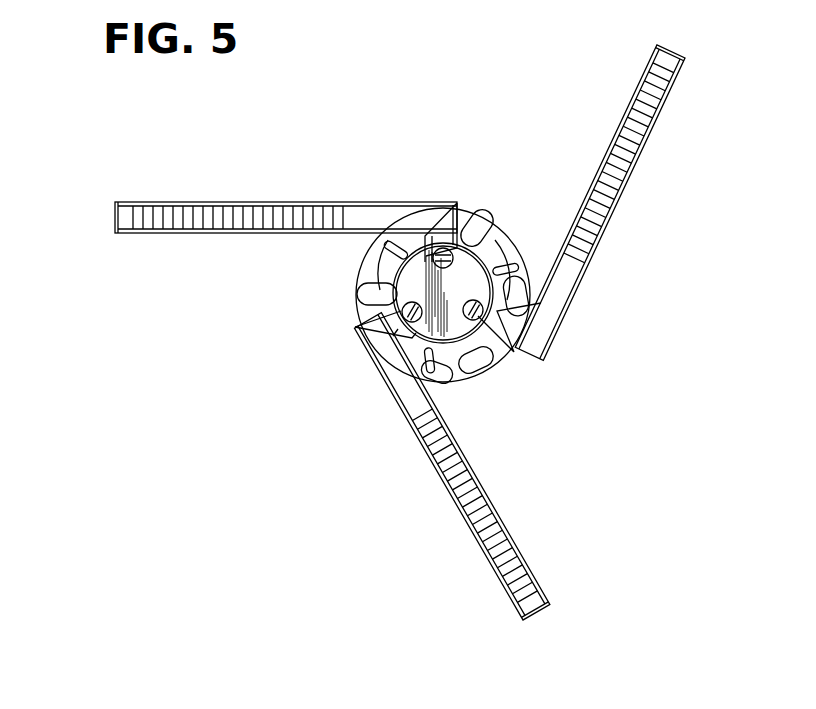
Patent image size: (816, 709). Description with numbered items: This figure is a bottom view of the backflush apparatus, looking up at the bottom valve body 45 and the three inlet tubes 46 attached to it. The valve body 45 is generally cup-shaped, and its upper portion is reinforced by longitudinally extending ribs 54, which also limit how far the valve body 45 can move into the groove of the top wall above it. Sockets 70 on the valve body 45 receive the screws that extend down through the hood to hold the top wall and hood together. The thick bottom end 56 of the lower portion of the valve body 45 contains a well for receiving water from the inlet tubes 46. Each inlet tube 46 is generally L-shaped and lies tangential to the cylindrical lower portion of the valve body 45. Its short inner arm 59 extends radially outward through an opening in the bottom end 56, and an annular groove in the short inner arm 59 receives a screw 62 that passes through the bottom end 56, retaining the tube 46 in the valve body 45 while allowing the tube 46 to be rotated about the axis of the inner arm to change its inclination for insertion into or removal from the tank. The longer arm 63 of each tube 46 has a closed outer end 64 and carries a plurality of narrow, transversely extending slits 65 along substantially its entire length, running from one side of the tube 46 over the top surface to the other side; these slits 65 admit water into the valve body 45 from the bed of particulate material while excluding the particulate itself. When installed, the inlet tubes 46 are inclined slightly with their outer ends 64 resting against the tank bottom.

The bottom valve body 45 is at (497, 215).
The inlet tubes 46 is at (116, 203).
The ribs 54 is at (516, 260).
The bottom end 56 is at (420, 262).
The short inner arm 59 is at (497, 322).
The screw 62 is at (392, 338).
The longer arm 63 is at (268, 203).
The closed outer end 64 is at (115, 217).
The slits 65 is at (233, 233).
The sockets 70 is at (478, 222).